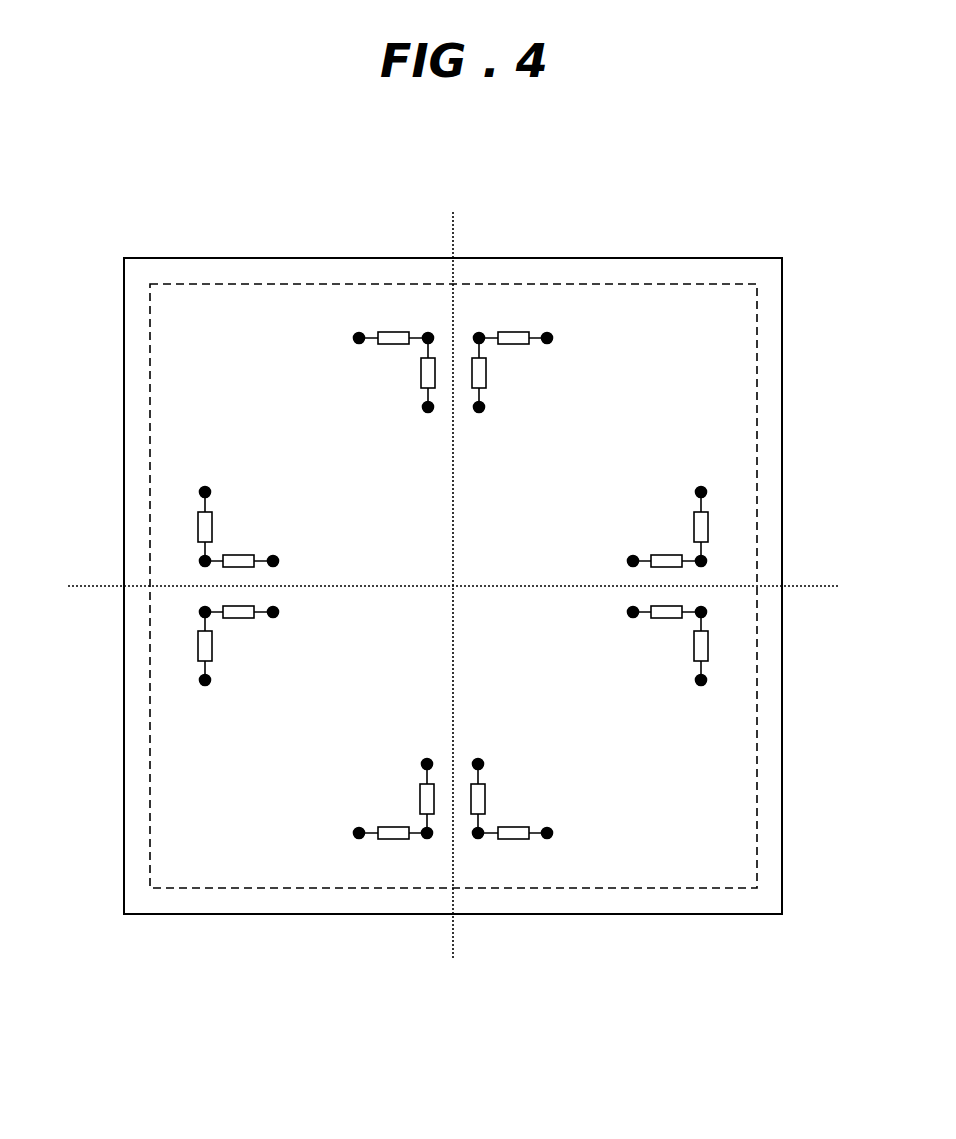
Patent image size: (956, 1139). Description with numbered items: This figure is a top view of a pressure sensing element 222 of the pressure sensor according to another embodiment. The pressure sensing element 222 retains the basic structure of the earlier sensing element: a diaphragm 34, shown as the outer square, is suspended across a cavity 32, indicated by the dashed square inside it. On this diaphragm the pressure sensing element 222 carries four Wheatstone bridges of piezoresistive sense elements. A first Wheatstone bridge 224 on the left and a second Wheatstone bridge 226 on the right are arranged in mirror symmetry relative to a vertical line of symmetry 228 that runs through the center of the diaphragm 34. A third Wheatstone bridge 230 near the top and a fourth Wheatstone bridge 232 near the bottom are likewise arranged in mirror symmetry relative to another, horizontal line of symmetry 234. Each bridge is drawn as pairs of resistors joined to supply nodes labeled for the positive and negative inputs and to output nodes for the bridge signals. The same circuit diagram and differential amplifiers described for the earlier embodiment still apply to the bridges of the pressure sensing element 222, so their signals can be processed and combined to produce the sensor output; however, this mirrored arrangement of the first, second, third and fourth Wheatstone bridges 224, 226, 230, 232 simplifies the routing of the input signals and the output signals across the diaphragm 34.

The diaphragm 34 is at (170, 268).
The cavity 32 is at (148, 425).
The pressure sensing element 222 is at (476, 1053).
The first Wheatstone bridge 224 is at (208, 457).
The second Wheatstone bridge 226 is at (675, 473).
The line of symmetry 228 is at (453, 504).
The third Wheatstone bridge 230 is at (593, 372).
The fourth Wheatstone bridge 232 is at (610, 825).
The line of symmetry 234 is at (352, 586).